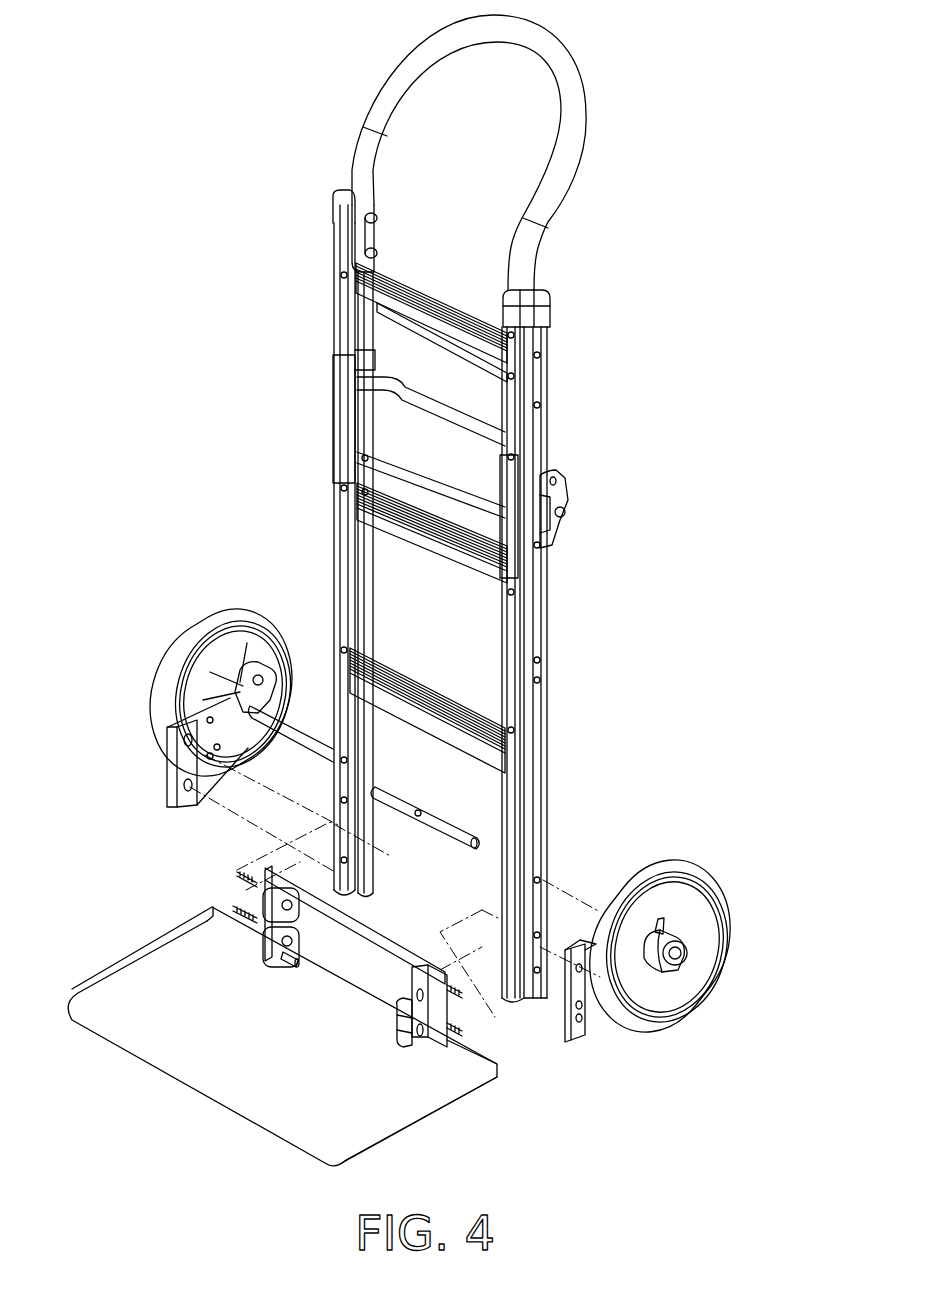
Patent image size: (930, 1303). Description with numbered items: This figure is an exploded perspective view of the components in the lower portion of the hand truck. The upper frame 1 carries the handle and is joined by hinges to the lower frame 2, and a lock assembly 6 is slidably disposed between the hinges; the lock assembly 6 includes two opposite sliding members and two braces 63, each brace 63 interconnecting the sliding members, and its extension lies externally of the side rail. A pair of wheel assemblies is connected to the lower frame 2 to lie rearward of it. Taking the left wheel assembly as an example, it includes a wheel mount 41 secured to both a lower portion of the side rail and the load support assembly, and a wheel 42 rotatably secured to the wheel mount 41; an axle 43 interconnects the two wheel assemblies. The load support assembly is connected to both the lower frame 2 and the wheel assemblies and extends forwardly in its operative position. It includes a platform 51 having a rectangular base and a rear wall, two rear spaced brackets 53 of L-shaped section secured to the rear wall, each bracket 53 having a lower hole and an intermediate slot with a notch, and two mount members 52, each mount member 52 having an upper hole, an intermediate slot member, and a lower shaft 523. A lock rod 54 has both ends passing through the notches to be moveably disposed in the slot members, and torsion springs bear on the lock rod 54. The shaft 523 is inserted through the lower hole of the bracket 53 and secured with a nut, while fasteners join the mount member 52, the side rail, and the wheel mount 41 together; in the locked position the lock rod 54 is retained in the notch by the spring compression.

The upper frame 1 is at (558, 411).
The lower frame 2 is at (557, 751).
The lock assembly 6 is at (306, 427).
The brace 63 is at (442, 425).
The wheel mount 41 is at (168, 782).
The wheel 42 is at (212, 625).
The axle 43 is at (412, 800).
The platform 51 is at (125, 949).
The mount member 52 is at (428, 1032).
The bracket 53 is at (262, 958).
The shaft 523 is at (290, 968).
The lock rod 54 is at (343, 978).